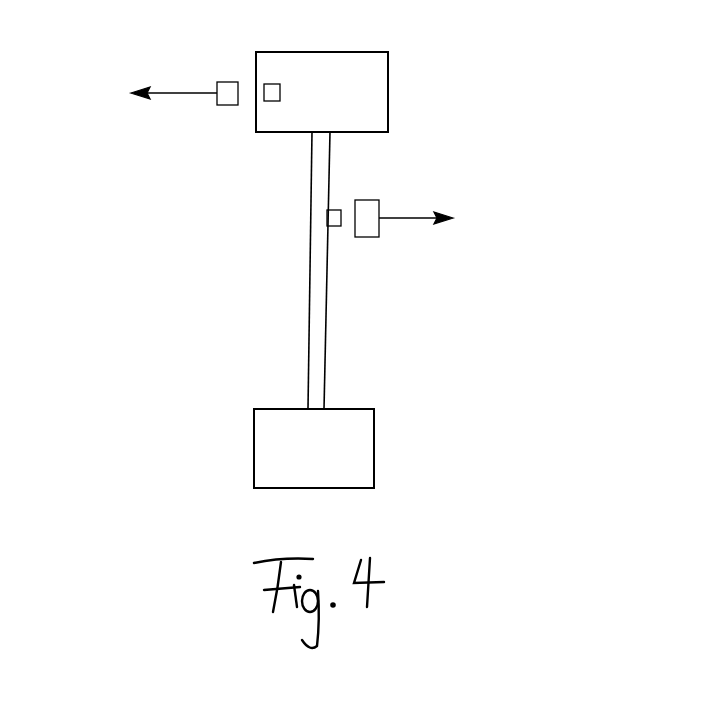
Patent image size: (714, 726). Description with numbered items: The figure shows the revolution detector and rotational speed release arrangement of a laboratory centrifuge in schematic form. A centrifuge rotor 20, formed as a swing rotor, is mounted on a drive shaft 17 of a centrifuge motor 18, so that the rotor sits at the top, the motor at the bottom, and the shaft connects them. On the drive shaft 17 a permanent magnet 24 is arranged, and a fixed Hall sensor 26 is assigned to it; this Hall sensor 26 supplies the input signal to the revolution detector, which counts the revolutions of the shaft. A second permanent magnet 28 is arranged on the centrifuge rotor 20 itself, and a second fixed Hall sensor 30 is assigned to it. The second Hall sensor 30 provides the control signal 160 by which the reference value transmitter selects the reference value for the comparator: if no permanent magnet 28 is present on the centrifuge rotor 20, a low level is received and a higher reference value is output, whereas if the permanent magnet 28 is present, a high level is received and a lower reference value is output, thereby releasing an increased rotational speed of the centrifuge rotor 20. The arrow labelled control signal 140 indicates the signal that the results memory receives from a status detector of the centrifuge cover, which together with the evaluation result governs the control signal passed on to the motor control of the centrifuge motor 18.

The drive shaft 17 is at (318, 315).
The centrifuge motor 18 is at (350, 446).
The centrifuge rotor 20 is at (368, 86).
The permanent magnet 24 is at (335, 210).
The Hall sensor 26 is at (362, 232).
The second permanent magnet 28 is at (274, 84).
The second Hall sensor 30 is at (232, 106).
The control signal 140 is at (420, 222).
The control signal 160 is at (184, 96).